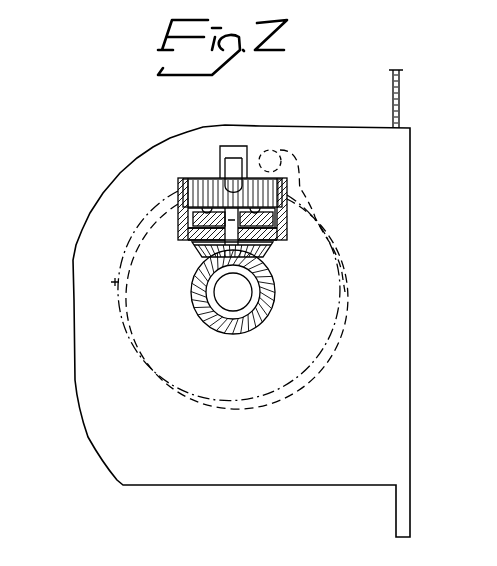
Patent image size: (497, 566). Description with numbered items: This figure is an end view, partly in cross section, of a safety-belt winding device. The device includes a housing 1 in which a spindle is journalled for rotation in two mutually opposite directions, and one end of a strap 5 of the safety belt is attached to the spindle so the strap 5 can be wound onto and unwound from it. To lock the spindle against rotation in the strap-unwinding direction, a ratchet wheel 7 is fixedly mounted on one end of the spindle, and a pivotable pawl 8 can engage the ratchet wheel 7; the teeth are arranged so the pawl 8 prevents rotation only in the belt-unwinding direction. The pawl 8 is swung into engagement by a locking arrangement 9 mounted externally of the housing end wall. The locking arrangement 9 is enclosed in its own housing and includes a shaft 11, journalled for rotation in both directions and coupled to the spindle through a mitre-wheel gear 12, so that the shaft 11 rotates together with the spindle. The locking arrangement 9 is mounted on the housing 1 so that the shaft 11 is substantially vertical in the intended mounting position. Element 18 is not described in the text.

The housing 1 is at (92, 417).
The strap 5 is at (401, 102).
The ratchet wheel 7 is at (115, 282).
The pawl 8 is at (278, 151).
The locking arrangement 9 is at (165, 212).
The shaft 11 is at (190, 236).
The mitre-wheel gear 12 is at (267, 261).
The shaft tube 18 is at (224, 164).